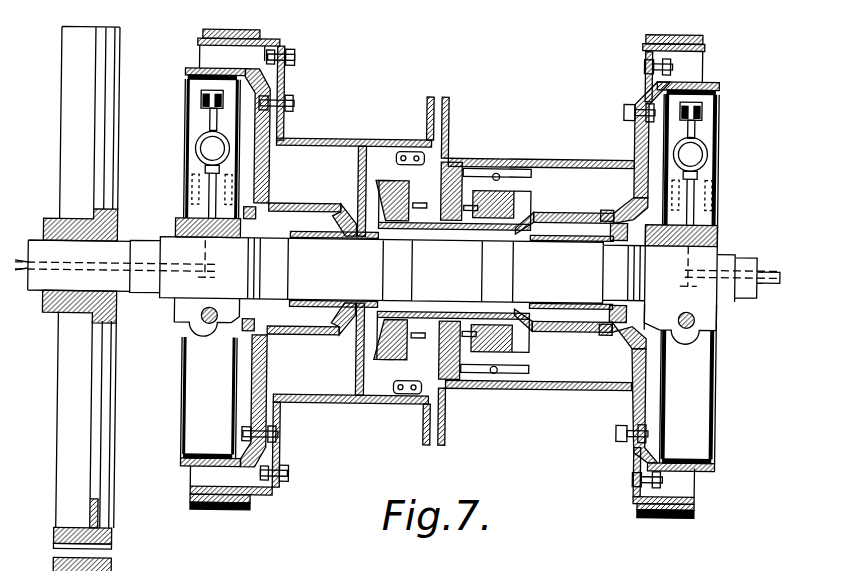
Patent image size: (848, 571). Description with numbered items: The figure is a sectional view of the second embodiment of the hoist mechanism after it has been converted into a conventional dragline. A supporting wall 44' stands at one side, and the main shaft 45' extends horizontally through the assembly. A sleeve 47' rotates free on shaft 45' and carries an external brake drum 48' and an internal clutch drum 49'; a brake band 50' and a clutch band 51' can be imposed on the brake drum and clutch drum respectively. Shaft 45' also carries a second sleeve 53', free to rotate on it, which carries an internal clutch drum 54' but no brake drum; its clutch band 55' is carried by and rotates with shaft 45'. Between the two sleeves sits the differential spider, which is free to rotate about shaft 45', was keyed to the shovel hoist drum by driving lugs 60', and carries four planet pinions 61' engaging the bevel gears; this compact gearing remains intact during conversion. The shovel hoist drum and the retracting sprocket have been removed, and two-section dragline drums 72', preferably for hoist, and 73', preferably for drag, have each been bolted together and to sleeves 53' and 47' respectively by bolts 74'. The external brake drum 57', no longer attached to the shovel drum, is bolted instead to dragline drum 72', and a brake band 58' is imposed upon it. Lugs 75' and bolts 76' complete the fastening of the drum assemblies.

The supporting wall 44' is at (64, 298).
The shaft 45' is at (60, 265).
The sleeve 47' is at (564, 254).
The external brake drum 48' is at (713, 64).
The internal clutch drum 49' is at (716, 85).
The brake band 50' is at (704, 40).
The clutch band 51' is at (716, 283).
The sleeve 53' is at (316, 270).
The internal clutch drum 54' is at (193, 66).
The clutch band 55' is at (187, 272).
The external brake drum 57' is at (207, 49).
The brake band 58' is at (200, 21).
The driving lugs 60' is at (451, 380).
The planet pinions 61' is at (453, 163).
The dragline drum 72' is at (352, 254).
The dragline drum 73' is at (539, 254).
The bolts 74' is at (448, 269).
The lug 75' is at (449, 265).
The bolt 76' is at (466, 268).